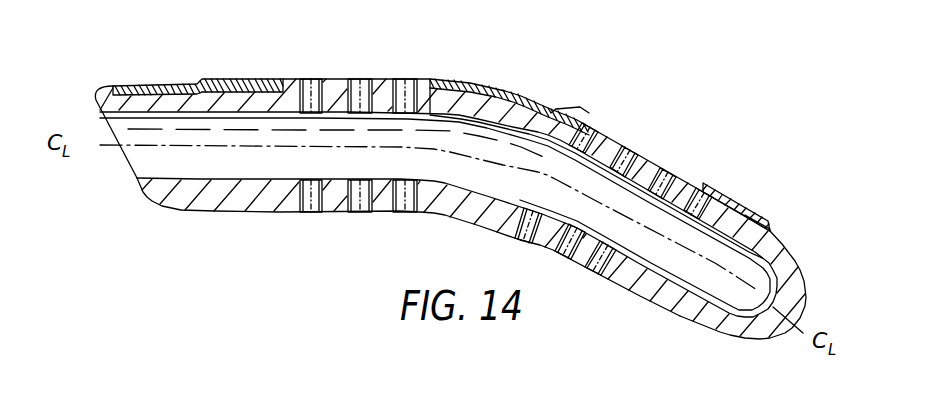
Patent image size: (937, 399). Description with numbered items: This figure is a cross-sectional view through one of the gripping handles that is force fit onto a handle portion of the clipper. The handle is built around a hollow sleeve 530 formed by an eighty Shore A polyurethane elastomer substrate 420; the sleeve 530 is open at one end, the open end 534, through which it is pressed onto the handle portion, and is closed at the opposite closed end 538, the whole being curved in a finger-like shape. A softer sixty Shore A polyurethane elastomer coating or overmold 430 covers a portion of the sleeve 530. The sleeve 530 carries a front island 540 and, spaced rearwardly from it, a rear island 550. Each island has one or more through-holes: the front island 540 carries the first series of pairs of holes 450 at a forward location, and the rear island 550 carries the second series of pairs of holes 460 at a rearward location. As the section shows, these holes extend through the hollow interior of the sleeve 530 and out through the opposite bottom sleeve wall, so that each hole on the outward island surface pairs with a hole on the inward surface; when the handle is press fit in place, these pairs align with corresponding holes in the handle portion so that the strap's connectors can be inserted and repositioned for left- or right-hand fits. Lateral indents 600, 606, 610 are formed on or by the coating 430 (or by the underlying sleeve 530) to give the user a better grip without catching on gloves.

The substrate 420 is at (670, 312).
The overmold 430 is at (252, 78).
The first series of pairs of holes 450 is at (361, 80).
The second series of pairs of holes 460 is at (644, 158).
The sleeve 530 is at (169, 213).
The open end 534 is at (135, 160).
The closed end 538 is at (805, 307).
The front island 540 is at (424, 78).
The rear island 550 is at (703, 181).
The lateral indent 600 is at (197, 82).
The lateral indent 606 is at (480, 80).
The lateral indent 610 is at (542, 108).